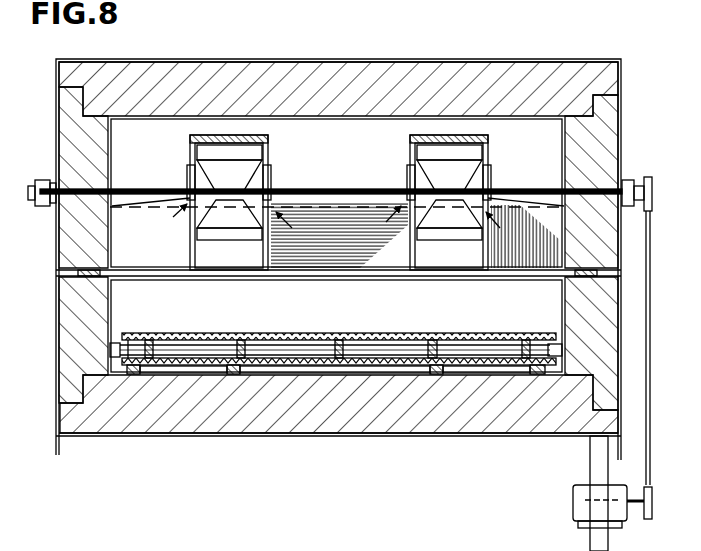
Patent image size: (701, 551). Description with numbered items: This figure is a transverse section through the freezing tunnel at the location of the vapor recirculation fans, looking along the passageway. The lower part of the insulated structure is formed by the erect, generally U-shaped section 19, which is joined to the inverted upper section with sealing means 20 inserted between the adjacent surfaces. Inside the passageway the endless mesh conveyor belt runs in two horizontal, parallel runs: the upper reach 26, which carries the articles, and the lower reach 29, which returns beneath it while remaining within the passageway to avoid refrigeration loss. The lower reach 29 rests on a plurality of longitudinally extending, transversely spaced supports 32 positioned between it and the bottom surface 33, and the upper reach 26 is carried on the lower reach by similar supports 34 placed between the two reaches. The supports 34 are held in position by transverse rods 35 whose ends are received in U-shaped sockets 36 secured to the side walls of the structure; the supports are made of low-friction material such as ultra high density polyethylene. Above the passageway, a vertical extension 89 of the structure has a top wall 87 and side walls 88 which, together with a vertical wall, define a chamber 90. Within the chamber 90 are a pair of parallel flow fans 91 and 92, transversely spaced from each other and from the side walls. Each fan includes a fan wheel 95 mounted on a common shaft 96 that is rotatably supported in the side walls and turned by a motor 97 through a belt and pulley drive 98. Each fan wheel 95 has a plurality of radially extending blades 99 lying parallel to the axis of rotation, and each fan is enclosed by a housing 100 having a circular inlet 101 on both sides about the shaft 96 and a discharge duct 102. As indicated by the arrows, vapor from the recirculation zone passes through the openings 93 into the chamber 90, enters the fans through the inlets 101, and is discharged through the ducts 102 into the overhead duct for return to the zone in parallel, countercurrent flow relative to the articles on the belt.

The erect, generally U-shaped section 19 is at (345, 440).
The sealing means 20 is at (82, 278).
The upper reach of the belt 26 is at (312, 333).
The lower reach of the belt 29 is at (313, 343).
The supports 32 is at (234, 346).
The bottom surface 33 is at (478, 370).
The supports 34 is at (349, 338).
The transverse rods 35 is at (128, 342).
The U-shaped sockets 36 is at (110, 347).
The top wall 87 is at (352, 117).
The side walls 88 is at (112, 170).
The vertical extension 89 is at (266, 57).
The chamber 90 is at (346, 155).
The parallel flow fan 91 is at (190, 145).
The parallel flow fan 92 is at (488, 147).
The openings 93 is at (155, 256).
The fan wheel 95 is at (272, 191).
The common shaft 96 is at (132, 188).
The motor 97 is at (575, 504).
The belt and pulley drive 98 is at (652, 316).
The blades 99 is at (252, 152).
The housing 100 is at (268, 148).
The circular inlet 101 is at (193, 186).
The discharge duct 102 is at (232, 269).